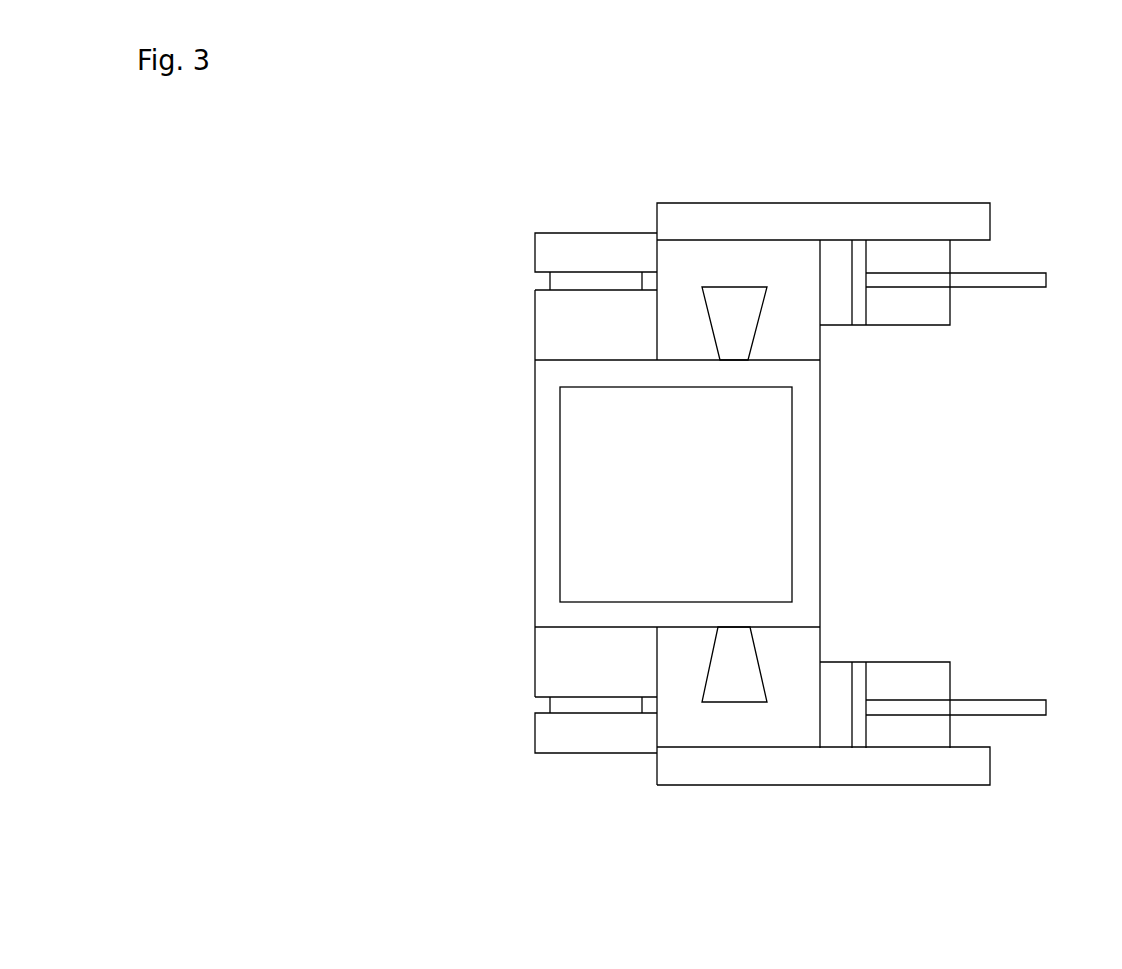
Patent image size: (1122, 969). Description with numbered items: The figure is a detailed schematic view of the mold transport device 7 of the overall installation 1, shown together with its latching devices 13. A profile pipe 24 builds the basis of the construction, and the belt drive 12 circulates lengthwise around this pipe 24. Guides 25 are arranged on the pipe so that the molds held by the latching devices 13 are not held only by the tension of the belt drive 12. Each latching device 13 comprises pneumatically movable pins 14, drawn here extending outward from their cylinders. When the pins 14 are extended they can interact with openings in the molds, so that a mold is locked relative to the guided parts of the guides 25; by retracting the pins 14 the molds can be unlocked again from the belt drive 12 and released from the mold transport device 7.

The clamping device 1 is at (396, 176).
The mold transport device 7 is at (610, 168).
The belt drive 12 is at (578, 284).
The latching device 13 is at (1037, 192).
The pin 14 is at (996, 326).
The profile pipe 24 is at (544, 502).
The guide 25 is at (786, 267).